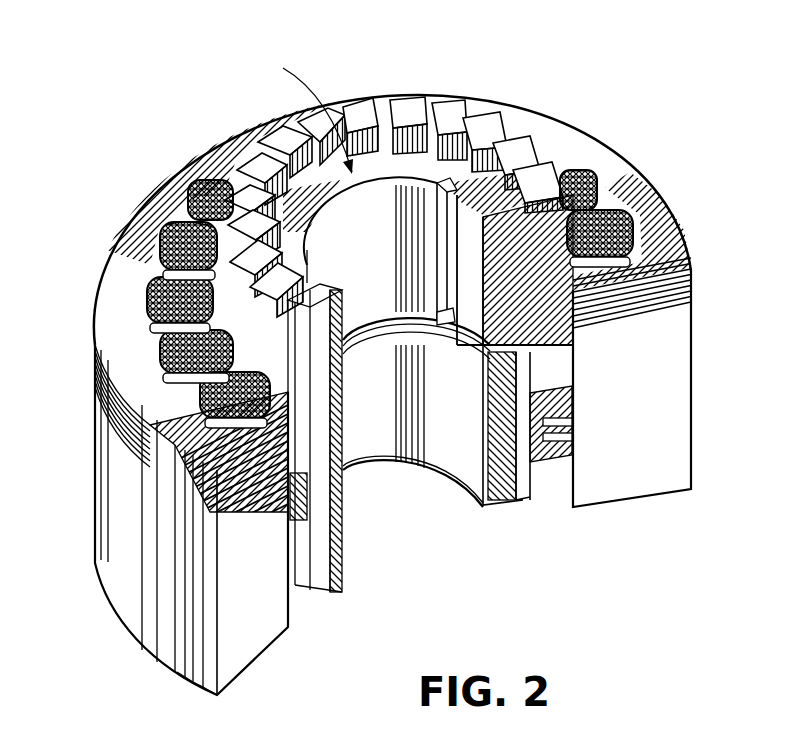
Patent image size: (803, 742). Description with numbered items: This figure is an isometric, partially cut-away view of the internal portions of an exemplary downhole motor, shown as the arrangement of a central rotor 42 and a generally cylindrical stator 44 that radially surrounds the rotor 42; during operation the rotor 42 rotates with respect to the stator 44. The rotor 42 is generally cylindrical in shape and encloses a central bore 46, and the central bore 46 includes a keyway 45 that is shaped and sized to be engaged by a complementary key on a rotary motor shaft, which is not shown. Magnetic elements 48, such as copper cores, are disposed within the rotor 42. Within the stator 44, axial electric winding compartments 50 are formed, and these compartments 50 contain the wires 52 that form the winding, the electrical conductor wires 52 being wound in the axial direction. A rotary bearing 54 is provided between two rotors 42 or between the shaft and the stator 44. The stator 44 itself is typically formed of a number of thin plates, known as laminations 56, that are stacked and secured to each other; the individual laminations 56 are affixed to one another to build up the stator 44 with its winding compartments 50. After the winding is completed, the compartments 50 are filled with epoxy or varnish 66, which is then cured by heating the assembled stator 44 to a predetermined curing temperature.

The rotor 42 is at (298, 115).
The stator 44 is at (633, 171).
The keyway 45 is at (447, 205).
The central bore 46 is at (310, 218).
The magnetic elements 48 is at (247, 160).
The axial electric winding compartments 50 is at (590, 195).
The wires 52 is at (632, 213).
The rotary bearing 54 is at (537, 460).
The laminations 56 is at (683, 281).
The epoxy or varnish 66 is at (170, 228).